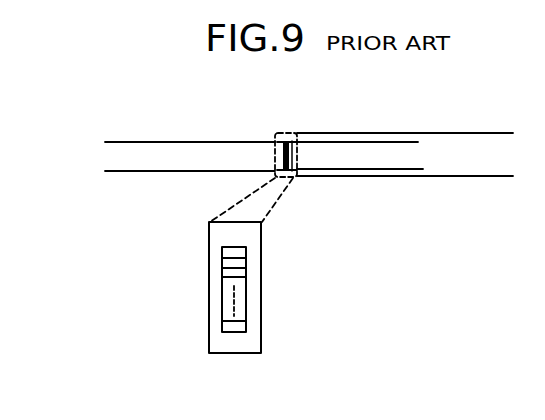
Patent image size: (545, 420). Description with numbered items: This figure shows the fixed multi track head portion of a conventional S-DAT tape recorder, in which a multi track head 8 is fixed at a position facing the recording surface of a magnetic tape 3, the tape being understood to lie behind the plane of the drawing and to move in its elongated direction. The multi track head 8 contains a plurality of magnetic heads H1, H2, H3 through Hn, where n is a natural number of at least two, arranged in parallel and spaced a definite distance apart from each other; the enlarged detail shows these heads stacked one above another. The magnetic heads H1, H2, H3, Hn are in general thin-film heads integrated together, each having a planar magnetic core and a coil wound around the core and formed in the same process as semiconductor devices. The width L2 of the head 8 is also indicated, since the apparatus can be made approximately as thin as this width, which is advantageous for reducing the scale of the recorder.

The magnetic tape 3 is at (395, 155).
The multi track head 8 is at (294, 146).
The magnetic head H1 is at (226, 253).
The magnetic head H2 is at (227, 262).
The magnetic head H3 is at (237, 272).
The magnetic head Hn is at (237, 326).
The width of head L2 is at (498, 95).